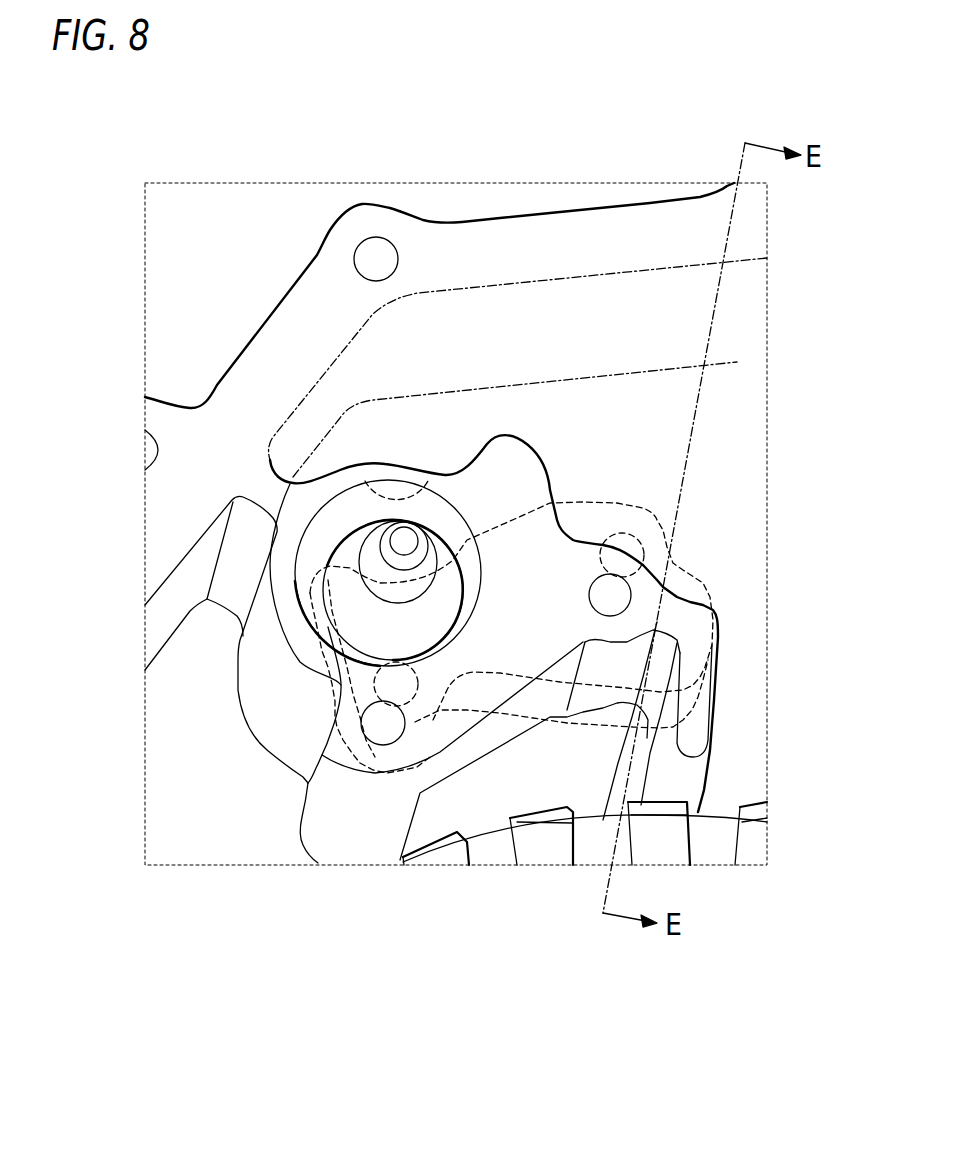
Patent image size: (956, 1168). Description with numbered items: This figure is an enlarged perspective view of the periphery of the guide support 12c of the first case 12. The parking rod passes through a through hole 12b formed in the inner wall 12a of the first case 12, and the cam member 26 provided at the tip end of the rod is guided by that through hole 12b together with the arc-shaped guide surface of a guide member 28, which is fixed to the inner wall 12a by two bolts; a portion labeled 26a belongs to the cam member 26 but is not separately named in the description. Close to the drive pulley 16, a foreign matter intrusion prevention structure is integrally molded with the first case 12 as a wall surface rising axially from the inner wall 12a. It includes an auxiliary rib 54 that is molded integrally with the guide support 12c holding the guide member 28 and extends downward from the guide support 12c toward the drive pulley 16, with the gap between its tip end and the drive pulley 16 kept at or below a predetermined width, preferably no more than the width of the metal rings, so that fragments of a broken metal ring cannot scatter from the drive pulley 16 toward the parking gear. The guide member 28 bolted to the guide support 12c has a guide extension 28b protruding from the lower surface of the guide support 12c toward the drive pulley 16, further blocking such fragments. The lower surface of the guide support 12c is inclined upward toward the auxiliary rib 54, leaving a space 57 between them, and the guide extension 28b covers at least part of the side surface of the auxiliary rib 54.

The first case 12 is at (578, 230).
The inner wall 12a is at (748, 556).
The through hole 12b is at (432, 483).
The guide support 12c is at (282, 720).
The drive pulley 16 is at (710, 843).
The cam member 26 is at (350, 550).
The pin 26a is at (353, 612).
The guide member 28 is at (647, 513).
The guide extension 28b is at (657, 657).
The auxiliary rib 54 is at (703, 730).
The space 57 is at (625, 757).